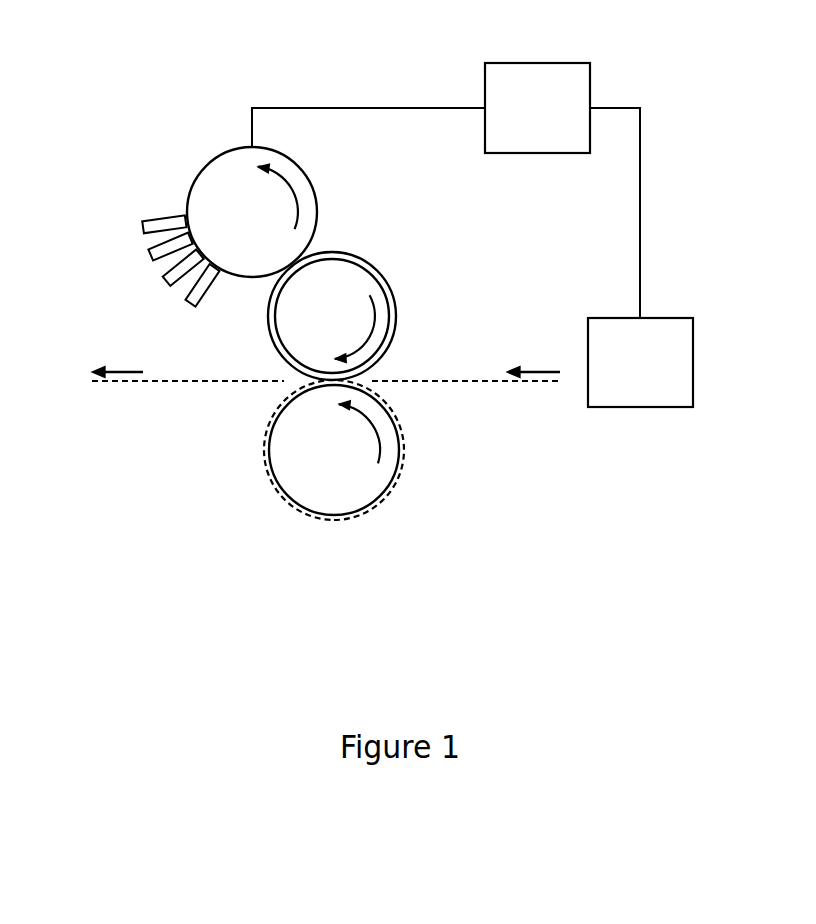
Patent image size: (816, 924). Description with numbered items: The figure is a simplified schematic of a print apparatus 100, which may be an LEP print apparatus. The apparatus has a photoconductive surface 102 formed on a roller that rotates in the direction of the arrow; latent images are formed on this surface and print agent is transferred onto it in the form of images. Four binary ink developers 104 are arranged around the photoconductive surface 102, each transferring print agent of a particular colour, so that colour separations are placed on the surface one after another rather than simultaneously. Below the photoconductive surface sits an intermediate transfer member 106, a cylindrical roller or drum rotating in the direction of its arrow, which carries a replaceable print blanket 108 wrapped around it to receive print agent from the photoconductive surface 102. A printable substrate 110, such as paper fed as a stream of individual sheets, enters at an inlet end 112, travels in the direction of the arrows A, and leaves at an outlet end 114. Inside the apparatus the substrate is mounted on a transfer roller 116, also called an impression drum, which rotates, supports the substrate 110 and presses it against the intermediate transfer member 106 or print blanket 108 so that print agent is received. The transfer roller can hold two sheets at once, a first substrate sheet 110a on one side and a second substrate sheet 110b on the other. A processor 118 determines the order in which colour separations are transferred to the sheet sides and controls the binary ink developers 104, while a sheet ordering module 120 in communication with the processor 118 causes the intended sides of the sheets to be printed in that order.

The print apparatus 100 is at (147, 68).
The photoconductive surface 102 is at (252, 212).
The binary ink developers 104 is at (143, 222).
The intermediate transfer member 106 is at (332, 316).
The print blanket 108 is at (393, 290).
The printable substrate 110 is at (440, 382).
The first substrate sheet 110a is at (285, 500).
The second substrate sheet 110b is at (400, 465).
The inlet end 112 is at (533, 380).
The outlet end 114 is at (117, 379).
The transfer roller 116 is at (334, 450).
The processor 118 is at (562, 63).
The sheet ordering module 120 is at (649, 313).